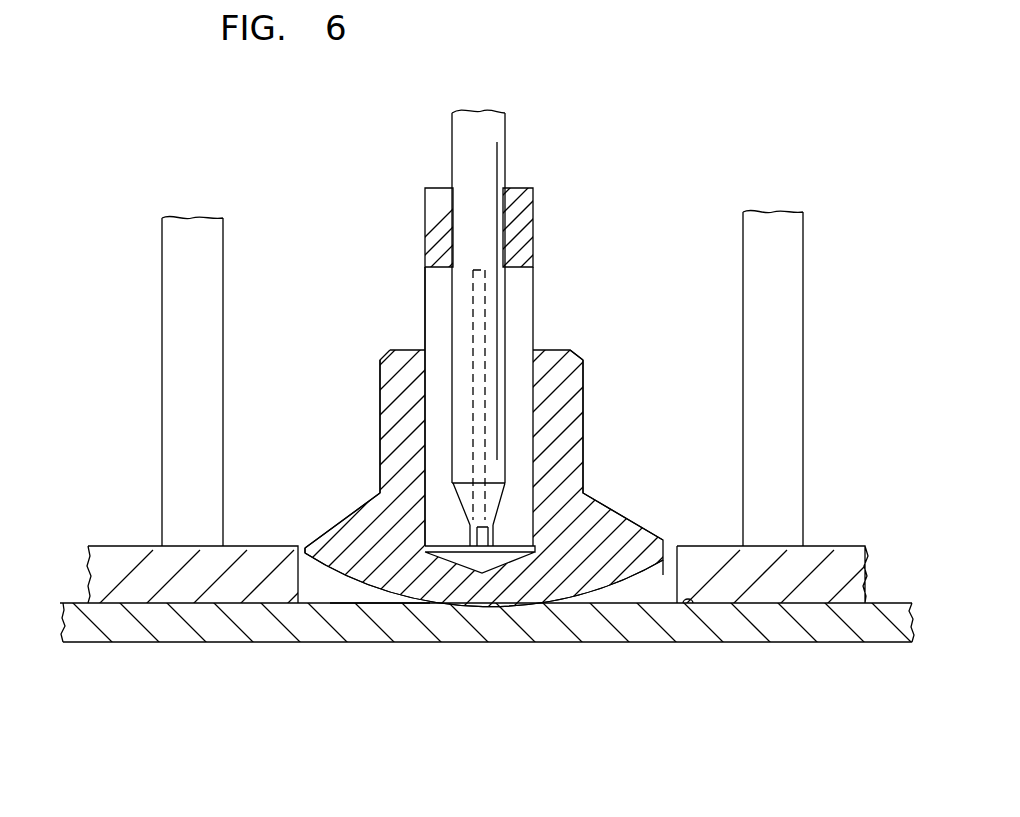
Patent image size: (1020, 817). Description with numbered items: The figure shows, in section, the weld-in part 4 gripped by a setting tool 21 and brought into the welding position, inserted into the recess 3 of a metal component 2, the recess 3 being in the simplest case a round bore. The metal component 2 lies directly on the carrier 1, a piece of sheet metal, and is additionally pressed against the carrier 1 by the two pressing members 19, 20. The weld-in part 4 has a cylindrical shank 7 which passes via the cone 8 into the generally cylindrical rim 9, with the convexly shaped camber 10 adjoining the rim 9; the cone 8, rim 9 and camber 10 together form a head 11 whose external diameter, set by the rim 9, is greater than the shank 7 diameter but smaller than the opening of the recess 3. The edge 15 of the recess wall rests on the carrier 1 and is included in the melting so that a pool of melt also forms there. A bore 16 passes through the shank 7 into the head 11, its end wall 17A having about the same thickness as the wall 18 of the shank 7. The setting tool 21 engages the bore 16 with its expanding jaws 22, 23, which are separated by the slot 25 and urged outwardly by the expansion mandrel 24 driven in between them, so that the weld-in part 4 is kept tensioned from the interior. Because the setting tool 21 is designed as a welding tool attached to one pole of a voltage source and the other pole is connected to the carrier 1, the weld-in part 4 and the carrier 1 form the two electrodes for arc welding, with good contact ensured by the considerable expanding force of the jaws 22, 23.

The carrier 1 is at (822, 623).
The metal component 2 is at (845, 558).
The recess 3 is at (675, 575).
The weld-in part 4 is at (592, 377).
The shank 7 is at (380, 420).
The cone 8 is at (685, 443).
The rim 9 is at (305, 545).
The camber 10 is at (365, 588).
The head 11 is at (350, 494).
The edge 15 is at (690, 598).
The bore 16 is at (423, 383).
The end wall 17A is at (492, 588).
The wall 18 is at (568, 427).
The pressing member 19 is at (783, 305).
The pressing member 20 is at (175, 290).
The setting tool 21 is at (541, 216).
The expanding jaw 22 is at (522, 303).
The expanding jaw 23 is at (435, 303).
The expansion mandrel 24 is at (460, 148).
The slot 25 is at (480, 347).